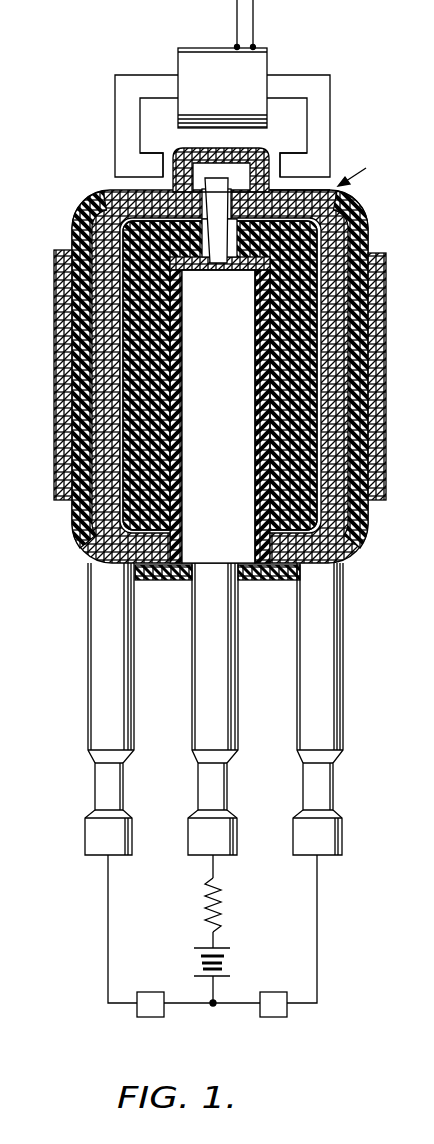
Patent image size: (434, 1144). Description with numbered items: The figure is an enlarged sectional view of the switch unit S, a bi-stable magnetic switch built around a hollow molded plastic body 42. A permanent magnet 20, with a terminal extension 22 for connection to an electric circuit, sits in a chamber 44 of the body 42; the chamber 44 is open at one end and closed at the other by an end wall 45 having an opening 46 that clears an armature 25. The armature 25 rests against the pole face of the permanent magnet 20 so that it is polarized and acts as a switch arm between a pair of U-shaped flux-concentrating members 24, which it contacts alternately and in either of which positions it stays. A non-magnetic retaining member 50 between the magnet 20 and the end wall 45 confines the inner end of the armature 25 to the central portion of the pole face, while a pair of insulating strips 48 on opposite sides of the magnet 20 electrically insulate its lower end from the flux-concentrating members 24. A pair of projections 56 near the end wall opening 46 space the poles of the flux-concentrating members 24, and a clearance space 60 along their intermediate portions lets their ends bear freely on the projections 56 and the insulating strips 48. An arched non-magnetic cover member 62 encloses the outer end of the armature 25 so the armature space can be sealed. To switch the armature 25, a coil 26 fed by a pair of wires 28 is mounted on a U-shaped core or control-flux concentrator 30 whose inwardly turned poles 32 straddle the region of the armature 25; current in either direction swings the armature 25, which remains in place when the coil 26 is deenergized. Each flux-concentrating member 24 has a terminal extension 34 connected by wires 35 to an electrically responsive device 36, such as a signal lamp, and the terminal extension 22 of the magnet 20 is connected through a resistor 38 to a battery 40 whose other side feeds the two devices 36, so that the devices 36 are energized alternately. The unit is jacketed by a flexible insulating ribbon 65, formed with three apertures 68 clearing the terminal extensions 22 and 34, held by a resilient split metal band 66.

The permanent magnet 20 is at (218, 416).
The terminal extension 22 is at (218, 687).
The flux-concentrating members 24 is at (107, 228).
The armature 25 is at (218, 181).
The coil 26 is at (192, 56).
The wires 28 is at (238, 21).
The control-flux concentrator 30 is at (320, 103).
The poles 32 is at (171, 154).
The terminal extensions 34 is at (102, 703).
The wires 35 is at (108, 950).
The electrically responsive devices 36 is at (152, 1017).
The resistor 38 is at (214, 912).
The battery 40 is at (231, 956).
The body 42 is at (322, 450).
The chamber 44 is at (266, 470).
The end wall 45 is at (131, 217).
The opening 46 is at (215, 271).
The strips 48 is at (266, 430).
The retaining member 50 is at (253, 271).
The projections 56 is at (294, 194).
The clearance space 60 is at (128, 378).
The cover member 62 is at (211, 151).
The flexible ribbon 65 is at (82, 452).
The split metal band 66 is at (66, 316).
The apertures 68 is at (82, 548).
The switch unit S is at (355, 164).